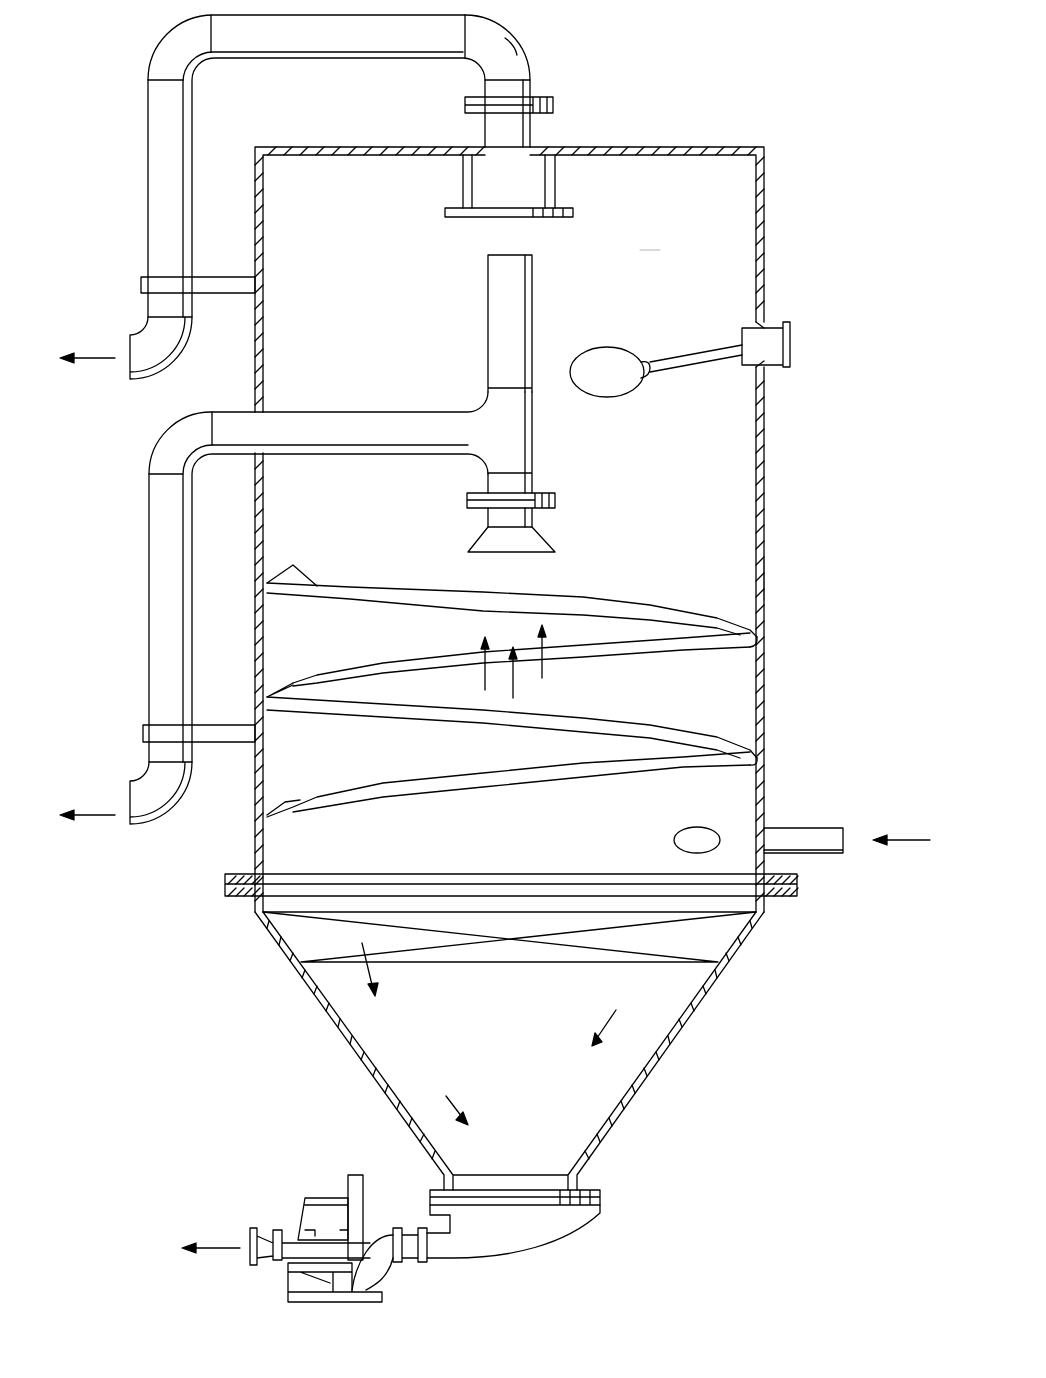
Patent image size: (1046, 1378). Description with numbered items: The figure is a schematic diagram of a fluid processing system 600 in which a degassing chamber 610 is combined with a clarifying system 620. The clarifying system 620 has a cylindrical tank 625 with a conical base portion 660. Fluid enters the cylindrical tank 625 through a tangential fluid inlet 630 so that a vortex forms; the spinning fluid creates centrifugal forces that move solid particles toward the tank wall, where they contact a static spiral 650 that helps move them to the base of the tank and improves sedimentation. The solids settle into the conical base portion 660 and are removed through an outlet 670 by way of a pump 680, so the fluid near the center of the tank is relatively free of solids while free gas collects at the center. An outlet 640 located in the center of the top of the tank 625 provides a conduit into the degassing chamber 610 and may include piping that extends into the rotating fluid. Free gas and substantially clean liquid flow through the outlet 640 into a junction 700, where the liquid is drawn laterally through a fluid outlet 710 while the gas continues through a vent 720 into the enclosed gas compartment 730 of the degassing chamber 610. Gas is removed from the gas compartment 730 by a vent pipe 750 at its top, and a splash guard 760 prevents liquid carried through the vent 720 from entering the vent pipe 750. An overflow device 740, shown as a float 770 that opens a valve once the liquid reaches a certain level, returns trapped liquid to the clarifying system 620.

The fluid processing system 600 is at (803, 113).
The degassing chamber 610 is at (764, 207).
The clarifying system 620 is at (785, 677).
The cylindrical tank 625 is at (765, 580).
The tangential fluid inlet 630 is at (817, 827).
The outlet 640 is at (543, 533).
The static spiral 650 is at (757, 724).
The conical base portion 660 is at (677, 1036).
The outlet 670 is at (600, 1194).
The pump 680 is at (382, 1293).
The junction 700 is at (527, 430).
The fluid outlet 710 is at (358, 410).
The vent 720 is at (488, 297).
The gas compartment 730 is at (671, 244).
The overflow device 740 is at (702, 350).
The vent pipe 750 is at (148, 135).
The splash guard 760 is at (445, 217).
The float 770 is at (603, 345).